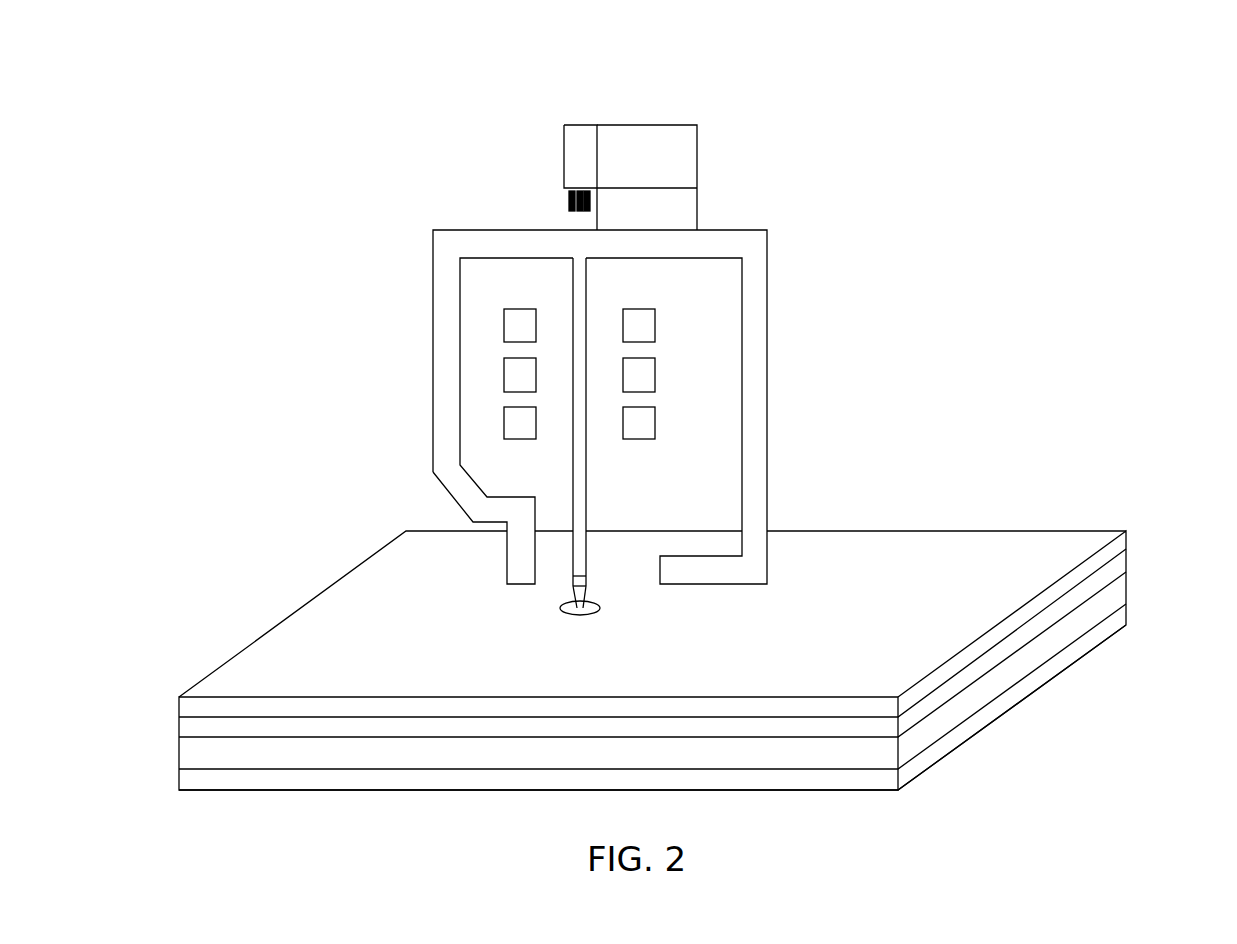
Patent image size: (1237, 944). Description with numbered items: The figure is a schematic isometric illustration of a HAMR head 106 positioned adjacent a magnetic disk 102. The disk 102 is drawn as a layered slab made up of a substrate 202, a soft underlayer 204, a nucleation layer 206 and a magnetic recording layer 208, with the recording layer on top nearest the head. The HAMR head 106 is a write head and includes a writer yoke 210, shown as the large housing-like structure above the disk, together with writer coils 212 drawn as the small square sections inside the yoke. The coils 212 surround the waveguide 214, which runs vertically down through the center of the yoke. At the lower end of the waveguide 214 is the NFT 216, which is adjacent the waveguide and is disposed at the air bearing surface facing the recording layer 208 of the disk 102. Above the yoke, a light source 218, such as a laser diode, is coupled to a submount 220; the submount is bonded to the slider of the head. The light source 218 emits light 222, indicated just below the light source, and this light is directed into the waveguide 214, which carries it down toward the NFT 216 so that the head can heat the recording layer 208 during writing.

The magnetic disk 102 is at (287, 517).
The HAMR head 106 is at (812, 340).
The substrate 202 is at (1118, 616).
The soft underlayer 204 is at (1115, 590).
The nucleation layer 206 is at (1120, 565).
The magnetic recording layer 208 is at (1120, 542).
The writer yoke 210 is at (487, 245).
The writer coils 212 is at (651, 316).
The waveguide 214 is at (587, 472).
The NFT 216 is at (585, 591).
The light source 218 is at (579, 130).
The submount 220 is at (653, 130).
The light 222 is at (566, 200).